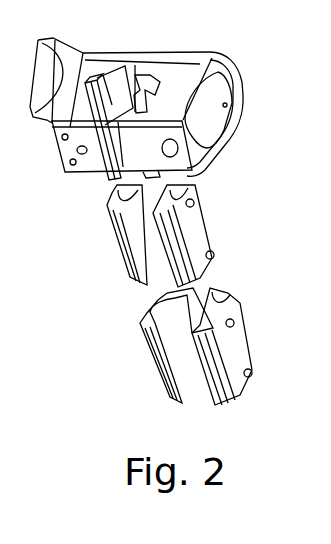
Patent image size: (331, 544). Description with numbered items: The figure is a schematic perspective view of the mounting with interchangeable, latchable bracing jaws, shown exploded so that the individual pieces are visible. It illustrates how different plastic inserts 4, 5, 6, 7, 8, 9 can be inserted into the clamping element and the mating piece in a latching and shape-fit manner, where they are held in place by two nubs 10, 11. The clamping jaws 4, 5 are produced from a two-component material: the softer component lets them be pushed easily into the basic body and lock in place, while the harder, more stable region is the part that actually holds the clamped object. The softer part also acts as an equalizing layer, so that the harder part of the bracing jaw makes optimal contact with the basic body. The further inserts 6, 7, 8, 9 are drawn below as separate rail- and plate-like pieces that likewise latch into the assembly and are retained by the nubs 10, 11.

The plastic insert 4 is at (106, 150).
The plastic insert 5 is at (141, 78).
The plastic insert 6 is at (200, 228).
The plastic insert 7 is at (122, 240).
The plastic insert 8 is at (162, 357).
The plastic insert 9 is at (238, 350).
The nub 10 is at (195, 200).
The nub 11 is at (215, 254).